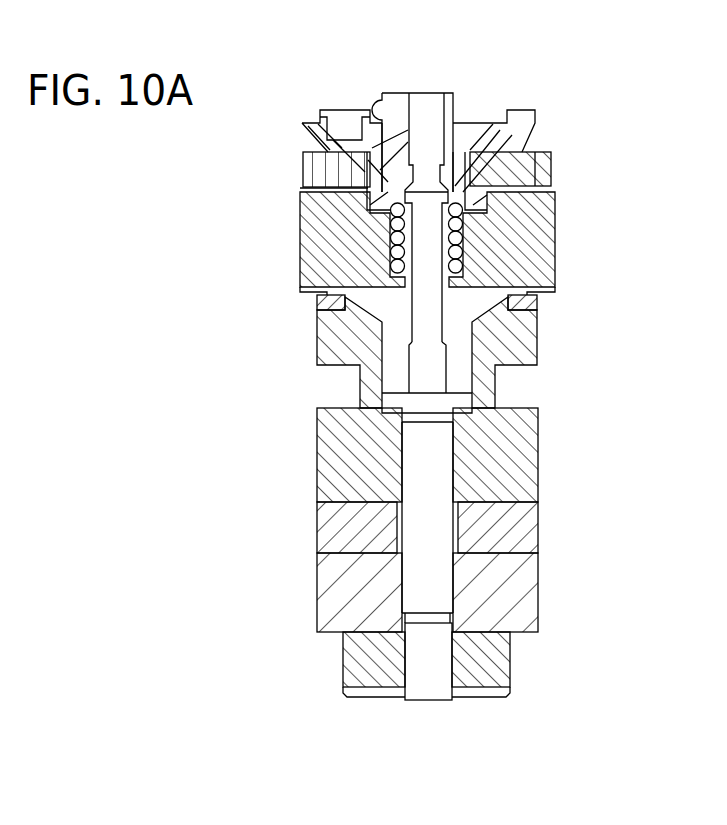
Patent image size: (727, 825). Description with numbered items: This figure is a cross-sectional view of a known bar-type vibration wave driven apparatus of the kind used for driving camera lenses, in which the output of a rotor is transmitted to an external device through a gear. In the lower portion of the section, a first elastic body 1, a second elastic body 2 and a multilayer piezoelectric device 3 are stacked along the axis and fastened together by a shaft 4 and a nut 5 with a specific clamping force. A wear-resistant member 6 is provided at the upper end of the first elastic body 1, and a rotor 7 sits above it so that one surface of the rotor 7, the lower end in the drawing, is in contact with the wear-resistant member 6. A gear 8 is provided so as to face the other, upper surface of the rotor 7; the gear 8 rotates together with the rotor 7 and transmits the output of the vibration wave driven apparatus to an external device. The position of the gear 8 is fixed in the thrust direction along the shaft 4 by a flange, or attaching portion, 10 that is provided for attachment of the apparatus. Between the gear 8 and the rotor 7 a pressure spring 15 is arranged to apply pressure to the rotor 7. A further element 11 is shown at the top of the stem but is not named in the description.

The first elastic body 1 is at (320, 462).
The second elastic body 2 is at (325, 581).
The multilayer piezoelectric device 3 is at (323, 525).
The shaft 4 is at (423, 680).
The nut 5 is at (350, 665).
The wear-resistant member 6 is at (313, 305).
The rotor 7 is at (312, 243).
The gear 8 is at (313, 173).
The flange (attaching portion) 10 is at (315, 133).
The stem tube 11 is at (452, 103).
The pressure spring 15 is at (463, 249).